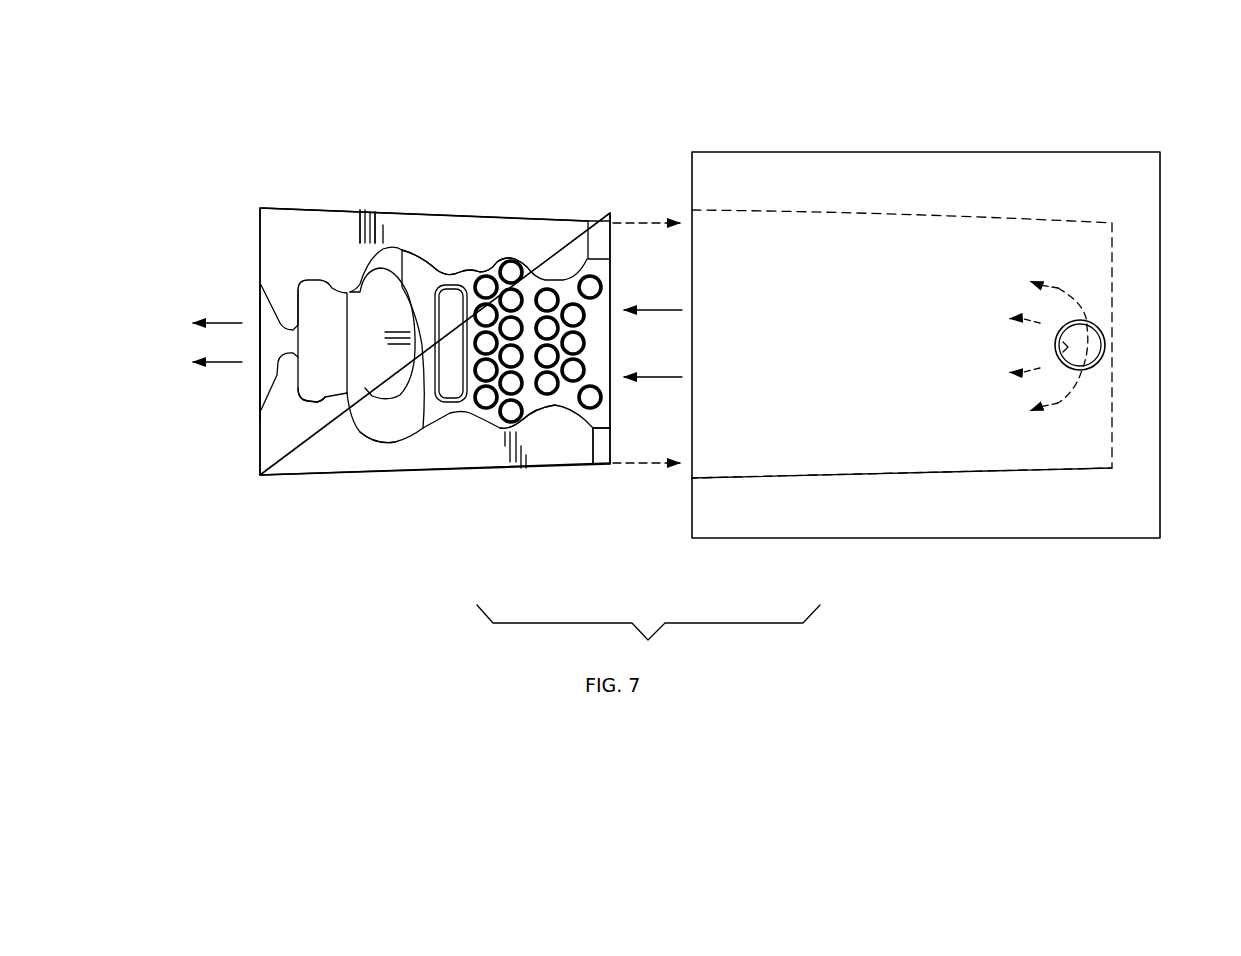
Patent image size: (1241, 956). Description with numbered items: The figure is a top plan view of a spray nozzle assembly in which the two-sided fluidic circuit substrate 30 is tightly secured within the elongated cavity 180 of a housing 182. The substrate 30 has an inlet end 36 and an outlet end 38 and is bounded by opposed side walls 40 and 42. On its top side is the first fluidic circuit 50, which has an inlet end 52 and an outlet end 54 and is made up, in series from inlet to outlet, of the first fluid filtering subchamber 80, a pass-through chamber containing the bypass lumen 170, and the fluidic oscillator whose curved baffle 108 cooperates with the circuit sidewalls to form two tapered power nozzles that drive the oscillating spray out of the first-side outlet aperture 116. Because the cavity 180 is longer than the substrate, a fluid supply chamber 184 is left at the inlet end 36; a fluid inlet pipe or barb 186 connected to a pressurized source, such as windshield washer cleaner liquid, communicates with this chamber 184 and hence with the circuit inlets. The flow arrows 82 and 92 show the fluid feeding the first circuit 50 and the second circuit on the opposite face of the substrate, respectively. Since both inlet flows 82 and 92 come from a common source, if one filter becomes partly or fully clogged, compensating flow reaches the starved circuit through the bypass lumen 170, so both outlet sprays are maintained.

The two-sided multiple-fluidic-circuit substrate 30 is at (418, 177).
The inlet end 36 is at (612, 220).
The outlet end 38 is at (260, 242).
The side wall 40 is at (270, 207).
The side wall 42 is at (362, 475).
The first fluidic circuit 50 is at (443, 254).
The inlet end of first fluidic circuit 52 is at (603, 417).
The outlet end of first fluidic circuit 54 is at (260, 377).
The first fluid filtering subchamber 80 is at (540, 408).
The fluid flow arrow (Feed 1) 82 is at (1040, 368).
The fluid flow arrow (Feed 2) 92 is at (1065, 285).
The curved baffle 108 is at (325, 395).
The first-side outlet aperture 116 is at (280, 323).
The bypass lumen 170 is at (452, 385).
The cavity 180 is at (840, 212).
The housing 182 is at (997, 152).
The fluid supply chamber 184 is at (983, 452).
The fluid inlet pipe or barb 186 is at (1107, 352).